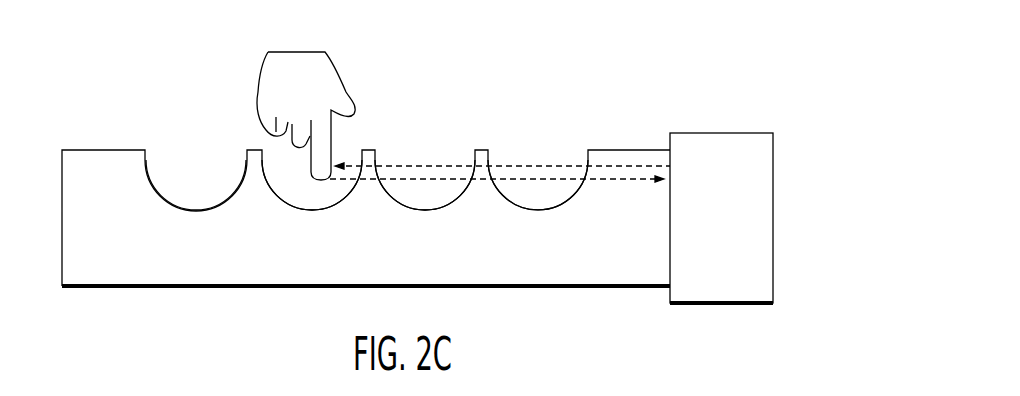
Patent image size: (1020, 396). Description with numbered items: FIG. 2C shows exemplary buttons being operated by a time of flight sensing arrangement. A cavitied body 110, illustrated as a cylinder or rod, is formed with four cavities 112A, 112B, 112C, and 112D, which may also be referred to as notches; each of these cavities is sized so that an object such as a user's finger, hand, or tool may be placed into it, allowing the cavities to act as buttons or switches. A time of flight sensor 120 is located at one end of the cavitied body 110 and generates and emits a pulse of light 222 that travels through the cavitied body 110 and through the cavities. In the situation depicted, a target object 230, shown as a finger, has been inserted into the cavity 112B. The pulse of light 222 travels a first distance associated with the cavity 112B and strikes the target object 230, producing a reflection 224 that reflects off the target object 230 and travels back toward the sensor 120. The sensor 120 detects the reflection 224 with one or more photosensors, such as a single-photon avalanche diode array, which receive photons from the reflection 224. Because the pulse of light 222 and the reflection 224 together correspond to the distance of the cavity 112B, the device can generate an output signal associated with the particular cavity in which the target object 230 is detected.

The cavitied body 110 is at (130, 290).
The cavity 112A is at (169, 197).
The cavity 112B is at (274, 199).
The cavity 112C is at (378, 154).
The cavity 112D is at (494, 155).
The time of flight sensor 120 is at (778, 149).
The pulse of light 222 is at (561, 159).
The reflection 224 is at (488, 186).
The target object 230 is at (313, 106).